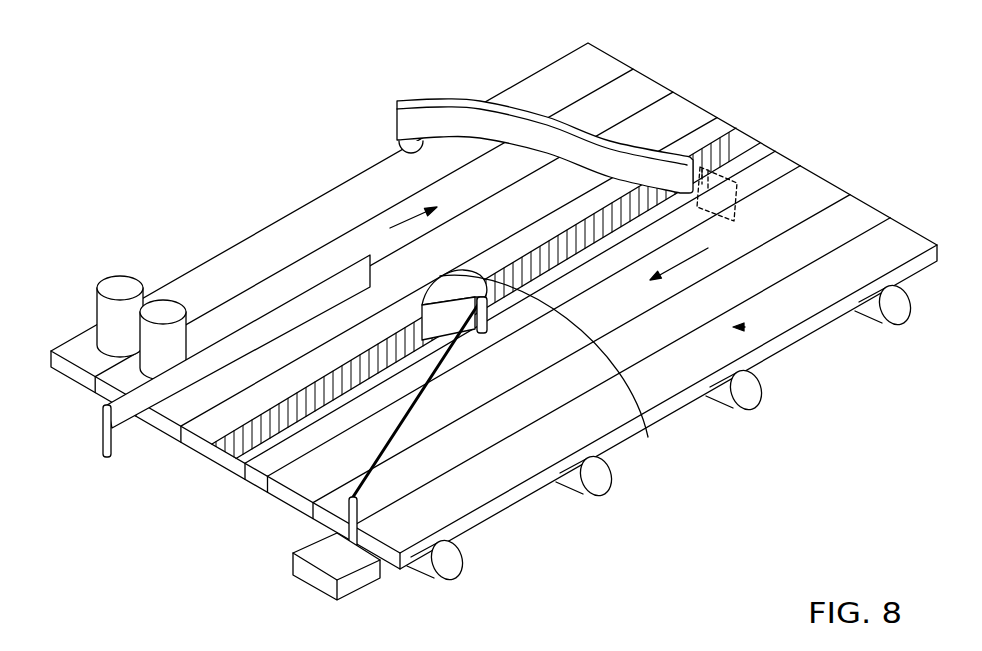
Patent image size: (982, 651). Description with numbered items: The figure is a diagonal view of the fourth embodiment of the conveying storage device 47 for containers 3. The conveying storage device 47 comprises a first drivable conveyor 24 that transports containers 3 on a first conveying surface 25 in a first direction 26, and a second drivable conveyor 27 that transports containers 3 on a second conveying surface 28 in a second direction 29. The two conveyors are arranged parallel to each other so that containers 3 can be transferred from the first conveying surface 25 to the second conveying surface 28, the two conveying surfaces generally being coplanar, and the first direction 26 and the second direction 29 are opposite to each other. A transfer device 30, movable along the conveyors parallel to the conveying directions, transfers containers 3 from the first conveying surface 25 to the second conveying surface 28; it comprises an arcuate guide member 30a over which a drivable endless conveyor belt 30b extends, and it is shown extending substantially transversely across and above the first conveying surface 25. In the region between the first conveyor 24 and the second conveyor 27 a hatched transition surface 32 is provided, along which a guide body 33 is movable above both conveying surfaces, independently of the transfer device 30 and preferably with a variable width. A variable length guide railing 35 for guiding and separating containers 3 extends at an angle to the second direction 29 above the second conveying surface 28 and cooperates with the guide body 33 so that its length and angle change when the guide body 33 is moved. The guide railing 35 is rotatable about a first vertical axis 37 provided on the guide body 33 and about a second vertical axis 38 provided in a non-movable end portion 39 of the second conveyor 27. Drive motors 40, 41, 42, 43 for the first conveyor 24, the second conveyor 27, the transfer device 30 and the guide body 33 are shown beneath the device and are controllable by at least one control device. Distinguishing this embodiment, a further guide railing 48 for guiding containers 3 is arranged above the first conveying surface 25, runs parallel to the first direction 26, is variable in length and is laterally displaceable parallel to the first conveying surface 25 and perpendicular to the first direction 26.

The containers 3 is at (152, 347).
The first drivable conveyor 24 is at (672, 86).
The first conveying surface 25 is at (307, 276).
The first direction 26 is at (390, 228).
The second drivable conveyor 27 is at (847, 185).
The second conveying surface 28 is at (745, 327).
The second direction 29 is at (690, 258).
The transfer device 30 is at (492, 109).
The arcuate guide member 30a is at (452, 102).
The drivable endless conveyor belt 30b is at (428, 136).
The transition surface 32 is at (747, 147).
The guide body 33 is at (648, 437).
The variable length guide railing 35 is at (410, 417).
The first vertical axis 37 is at (459, 422).
The second vertical axis 38 is at (340, 540).
The non-movable end portion 39 is at (313, 562).
The drive motor 40 is at (445, 565).
The drive motor 41 is at (594, 482).
The drive motor 42 is at (744, 395).
The drive motor 43 is at (894, 310).
The conveying storage device 47 is at (213, 121).
The further guide railing 48 is at (190, 382).